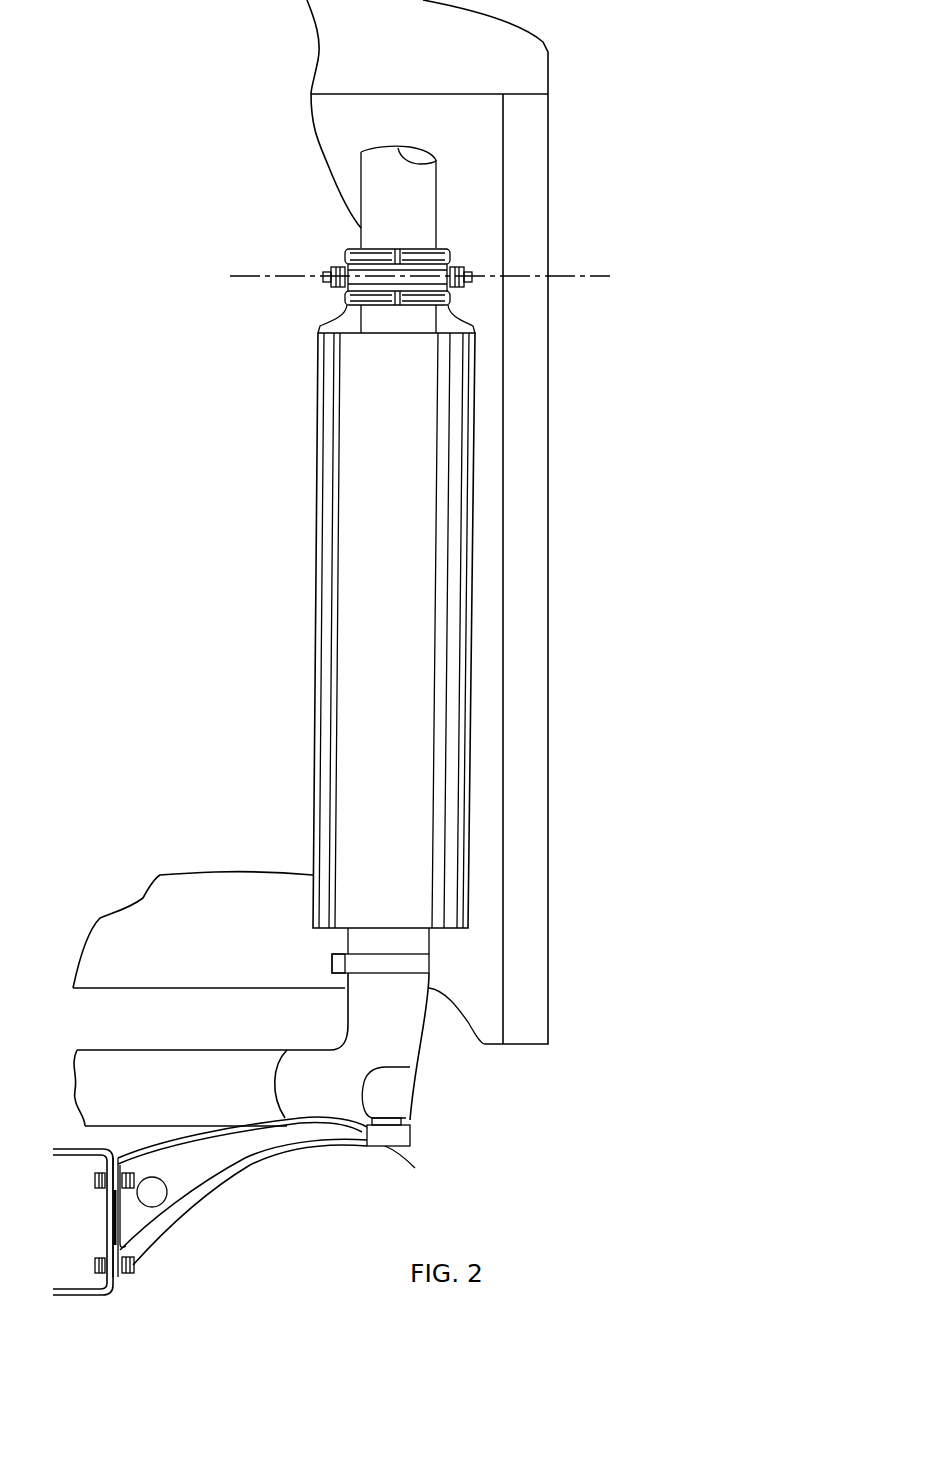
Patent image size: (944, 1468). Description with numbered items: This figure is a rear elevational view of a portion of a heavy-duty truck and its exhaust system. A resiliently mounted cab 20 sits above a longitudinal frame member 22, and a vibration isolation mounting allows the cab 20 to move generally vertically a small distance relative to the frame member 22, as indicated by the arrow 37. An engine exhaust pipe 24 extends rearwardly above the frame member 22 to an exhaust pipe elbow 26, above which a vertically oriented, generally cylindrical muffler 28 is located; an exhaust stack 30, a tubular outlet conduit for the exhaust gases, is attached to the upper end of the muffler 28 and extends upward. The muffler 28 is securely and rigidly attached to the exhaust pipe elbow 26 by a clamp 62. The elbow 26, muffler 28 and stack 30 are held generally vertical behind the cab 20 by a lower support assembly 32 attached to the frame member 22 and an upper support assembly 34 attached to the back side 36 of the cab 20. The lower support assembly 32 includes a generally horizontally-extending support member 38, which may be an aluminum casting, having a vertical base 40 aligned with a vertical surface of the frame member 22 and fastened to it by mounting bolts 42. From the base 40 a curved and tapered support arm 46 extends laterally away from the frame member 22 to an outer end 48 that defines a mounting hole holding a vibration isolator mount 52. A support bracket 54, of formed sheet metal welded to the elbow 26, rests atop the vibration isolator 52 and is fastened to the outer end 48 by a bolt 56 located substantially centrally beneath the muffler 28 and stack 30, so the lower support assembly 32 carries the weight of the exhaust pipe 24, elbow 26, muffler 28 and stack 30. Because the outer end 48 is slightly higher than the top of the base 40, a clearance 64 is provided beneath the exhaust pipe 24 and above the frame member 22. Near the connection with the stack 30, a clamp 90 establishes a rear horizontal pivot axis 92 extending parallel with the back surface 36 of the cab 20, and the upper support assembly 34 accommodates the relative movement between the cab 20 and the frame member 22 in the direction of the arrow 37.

The cab 20 is at (545, 46).
The longitudinal frame member 22 is at (72, 1292).
The engine exhaust pipe 24 is at (158, 1058).
The exhaust pipe elbow 26 is at (410, 1043).
The muffler 28 is at (462, 427).
The exhaust stack 30 is at (425, 210).
The lower support assembly 32 is at (325, 1212).
The upper support assembly 34 is at (285, 243).
The back side of the cab 36 is at (463, 137).
The arrow 37 is at (530, 575).
The lower support member 38 is at (182, 1218).
The base 40 is at (110, 1210).
The mounting bolts 42 is at (135, 1268).
The support arm 46 is at (250, 1150).
The outer end 48 is at (410, 1137).
The vibration isolator mount 52 is at (405, 1122).
The support bracket 54 is at (403, 1078).
The bolt 56 is at (392, 1150).
The clamp 62 is at (425, 963).
The clearance 64 is at (90, 1128).
The clamp 90 is at (347, 305).
The rear horizontal pivot axis 92 is at (508, 276).